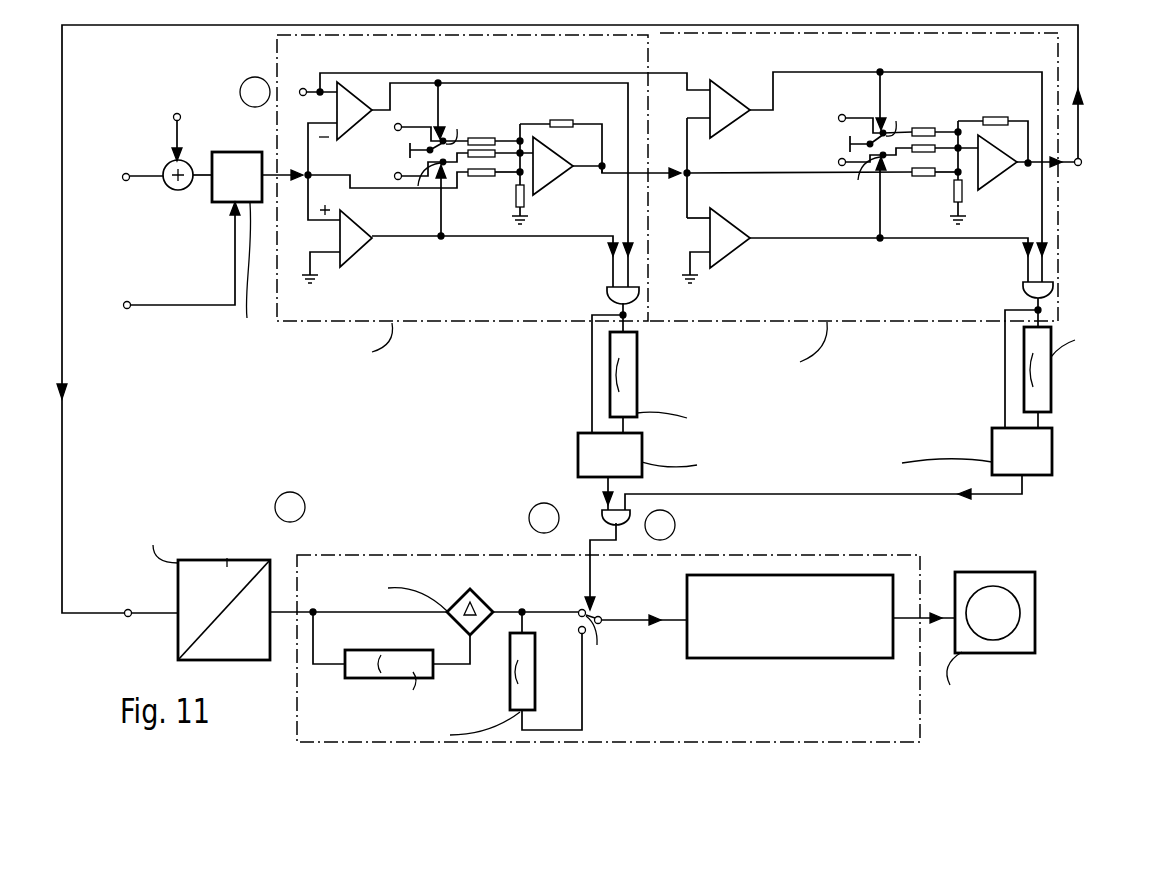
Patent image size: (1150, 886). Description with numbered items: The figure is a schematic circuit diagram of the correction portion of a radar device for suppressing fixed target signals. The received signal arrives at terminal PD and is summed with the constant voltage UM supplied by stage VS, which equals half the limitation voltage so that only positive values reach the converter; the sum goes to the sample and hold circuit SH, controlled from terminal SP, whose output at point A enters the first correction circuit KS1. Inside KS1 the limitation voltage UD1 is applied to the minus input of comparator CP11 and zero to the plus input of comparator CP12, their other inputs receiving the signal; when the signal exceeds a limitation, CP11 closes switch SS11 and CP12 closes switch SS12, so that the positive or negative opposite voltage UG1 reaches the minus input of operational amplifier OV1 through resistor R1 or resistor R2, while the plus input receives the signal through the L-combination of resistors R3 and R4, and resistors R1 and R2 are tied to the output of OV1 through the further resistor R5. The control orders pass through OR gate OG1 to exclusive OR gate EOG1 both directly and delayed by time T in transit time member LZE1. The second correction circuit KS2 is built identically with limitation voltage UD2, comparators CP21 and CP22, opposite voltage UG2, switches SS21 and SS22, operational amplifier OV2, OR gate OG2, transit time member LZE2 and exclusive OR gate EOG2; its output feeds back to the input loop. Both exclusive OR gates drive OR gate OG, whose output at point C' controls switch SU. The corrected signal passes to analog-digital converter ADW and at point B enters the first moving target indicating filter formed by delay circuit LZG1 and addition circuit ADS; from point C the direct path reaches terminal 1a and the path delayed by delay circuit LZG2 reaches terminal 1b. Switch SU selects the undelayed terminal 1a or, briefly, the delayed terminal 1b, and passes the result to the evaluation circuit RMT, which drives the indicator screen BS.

The constant voltage value UM is at (178, 122).
The input terminal PD is at (141, 163).
The voltage supply stage VS is at (192, 187).
The control terminal SP is at (179, 255).
The sample and hold circuit SH is at (233, 152).
The point A is at (268, 170).
The first correction circuit KS1 is at (456, 322).
The first limitation voltage UD1 is at (493, 78).
The first comparator CP11 is at (470, 167).
The second comparator CP12 is at (460, 233).
The first opposite voltage UG1 is at (395, 155).
The first switch SS11 is at (444, 130).
The second switch SS12 is at (422, 188).
The first resistor R1 is at (700, 124).
The second resistor R2 is at (467, 160).
The third resistor R3 is at (493, 178).
The fourth resistor R4 is at (752, 173).
The feedback resistor R5 is at (774, 133).
The operational amplifier OV1 is at (607, 164).
The first OR gate OG1 is at (606, 295).
The first transit time member LZE1 is at (637, 397).
The first exclusive OR gate EOG1 is at (580, 447).
The OR gate OG is at (799, 542).
The point C is at (538, 554).
The point C' is at (639, 561).
The point B is at (290, 522).
The second correction circuit KS2 is at (878, 320).
The second limitation voltage UD2 is at (702, 56).
The third comparator CP21 is at (867, 175).
The fourth comparator CP22 is at (857, 229).
The second opposite voltage UG2 is at (835, 136).
The third switch SS21 is at (886, 123).
The fourth switch SS22 is at (863, 180).
The second operational amplifier OV2 is at (1030, 170).
The second OR gate OG2 is at (1022, 290).
The second transit time member LZE2 is at (1051, 395).
The second exclusive OR gate EOG2 is at (995, 446).
The analog-digital converter ADW is at (270, 578).
The addition circuit ADS is at (444, 599).
The first delay circuit LZG1 is at (358, 678).
The second delay circuit LZG2 is at (516, 673).
The undelayed terminal 1a is at (574, 600).
The delayed terminal 1b is at (571, 633).
The switch SU is at (636, 645).
The evaluation circuit RMT is at (790, 658).
The screen BS is at (1035, 618).